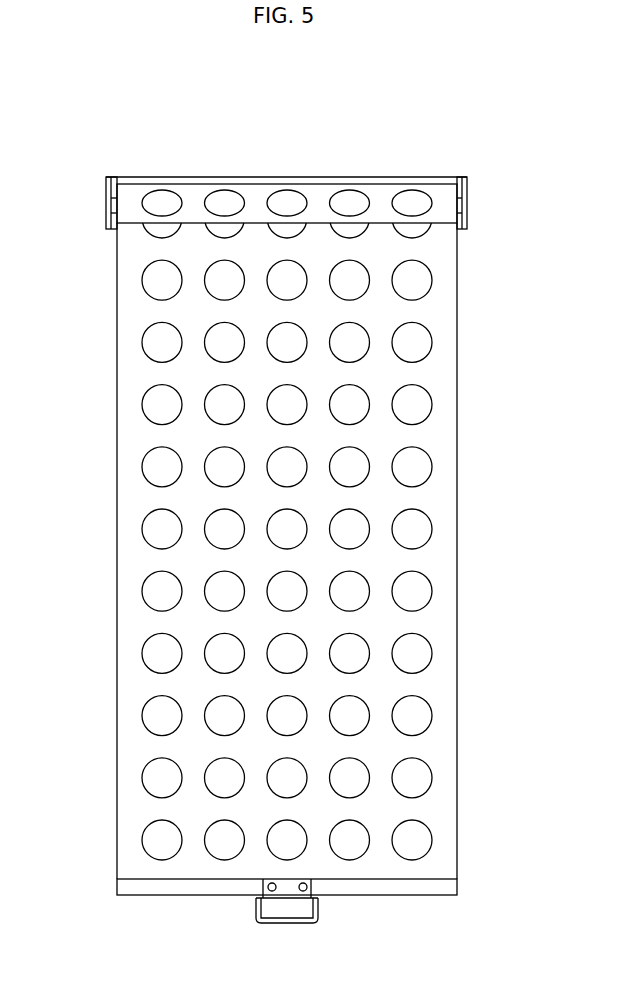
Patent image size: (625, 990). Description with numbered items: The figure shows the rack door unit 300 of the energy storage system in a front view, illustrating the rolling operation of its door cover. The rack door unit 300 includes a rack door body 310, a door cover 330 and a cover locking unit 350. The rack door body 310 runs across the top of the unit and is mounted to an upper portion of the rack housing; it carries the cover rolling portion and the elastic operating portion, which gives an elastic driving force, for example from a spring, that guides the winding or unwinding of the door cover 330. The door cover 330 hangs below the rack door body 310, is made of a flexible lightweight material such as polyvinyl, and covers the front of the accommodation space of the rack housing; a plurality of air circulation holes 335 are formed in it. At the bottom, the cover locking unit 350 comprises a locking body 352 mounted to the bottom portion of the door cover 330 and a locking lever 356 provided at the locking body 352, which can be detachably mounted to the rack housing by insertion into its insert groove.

The rack door unit 300 is at (88, 126).
The rack door body 310 is at (278, 170).
The door cover 330 is at (102, 465).
The air circulation hole 335 is at (142, 341).
The cover locking unit 350 is at (185, 911).
The locking body 352 is at (225, 889).
The locking lever 356 is at (287, 925).